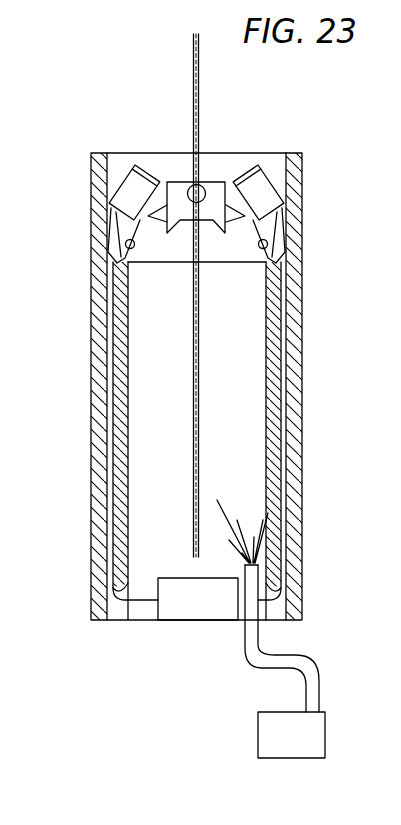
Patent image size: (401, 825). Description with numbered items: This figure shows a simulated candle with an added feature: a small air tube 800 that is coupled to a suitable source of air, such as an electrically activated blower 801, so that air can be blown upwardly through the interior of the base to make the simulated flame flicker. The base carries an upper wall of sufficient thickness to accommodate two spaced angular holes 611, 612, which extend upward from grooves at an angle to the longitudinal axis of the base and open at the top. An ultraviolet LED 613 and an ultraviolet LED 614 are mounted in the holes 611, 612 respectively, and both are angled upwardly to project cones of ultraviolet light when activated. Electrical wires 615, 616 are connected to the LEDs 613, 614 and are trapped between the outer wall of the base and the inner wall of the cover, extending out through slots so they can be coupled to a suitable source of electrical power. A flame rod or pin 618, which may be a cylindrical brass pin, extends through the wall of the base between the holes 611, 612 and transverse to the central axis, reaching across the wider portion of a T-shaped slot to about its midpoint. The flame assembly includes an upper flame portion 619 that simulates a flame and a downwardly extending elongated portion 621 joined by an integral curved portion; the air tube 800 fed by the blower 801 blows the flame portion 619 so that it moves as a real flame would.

The angular hole 611 is at (264, 250).
The angular hole 612 is at (126, 247).
The ultraviolet LED 613 is at (232, 160).
The ultraviolet LED 614 is at (153, 162).
The electrical wire 615 is at (120, 593).
The electrical wire 616 is at (287, 605).
The flame rod or pin 618 is at (172, 578).
The upper flame portion 619 is at (193, 63).
The downwardly extending elongated portion 621 is at (197, 445).
The air tube 800 is at (258, 667).
The electrically activated blower 801 is at (258, 742).